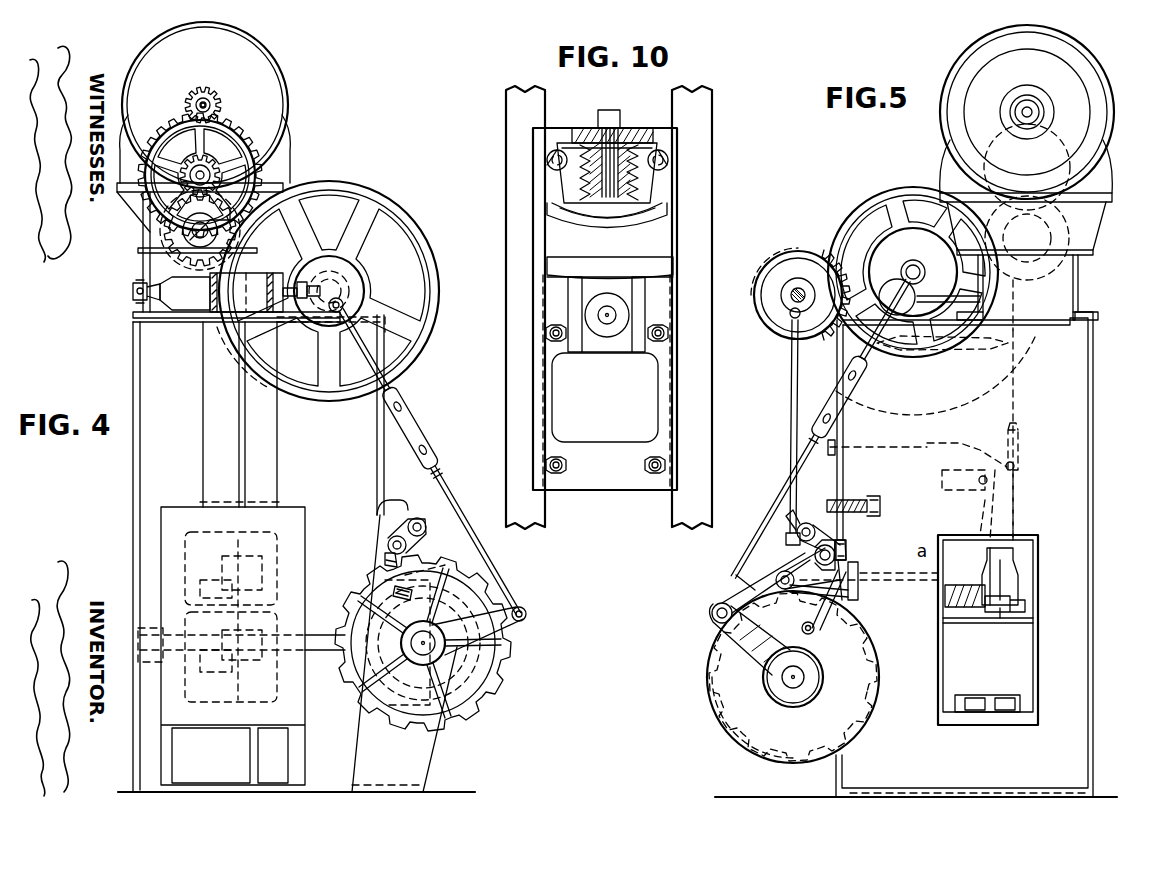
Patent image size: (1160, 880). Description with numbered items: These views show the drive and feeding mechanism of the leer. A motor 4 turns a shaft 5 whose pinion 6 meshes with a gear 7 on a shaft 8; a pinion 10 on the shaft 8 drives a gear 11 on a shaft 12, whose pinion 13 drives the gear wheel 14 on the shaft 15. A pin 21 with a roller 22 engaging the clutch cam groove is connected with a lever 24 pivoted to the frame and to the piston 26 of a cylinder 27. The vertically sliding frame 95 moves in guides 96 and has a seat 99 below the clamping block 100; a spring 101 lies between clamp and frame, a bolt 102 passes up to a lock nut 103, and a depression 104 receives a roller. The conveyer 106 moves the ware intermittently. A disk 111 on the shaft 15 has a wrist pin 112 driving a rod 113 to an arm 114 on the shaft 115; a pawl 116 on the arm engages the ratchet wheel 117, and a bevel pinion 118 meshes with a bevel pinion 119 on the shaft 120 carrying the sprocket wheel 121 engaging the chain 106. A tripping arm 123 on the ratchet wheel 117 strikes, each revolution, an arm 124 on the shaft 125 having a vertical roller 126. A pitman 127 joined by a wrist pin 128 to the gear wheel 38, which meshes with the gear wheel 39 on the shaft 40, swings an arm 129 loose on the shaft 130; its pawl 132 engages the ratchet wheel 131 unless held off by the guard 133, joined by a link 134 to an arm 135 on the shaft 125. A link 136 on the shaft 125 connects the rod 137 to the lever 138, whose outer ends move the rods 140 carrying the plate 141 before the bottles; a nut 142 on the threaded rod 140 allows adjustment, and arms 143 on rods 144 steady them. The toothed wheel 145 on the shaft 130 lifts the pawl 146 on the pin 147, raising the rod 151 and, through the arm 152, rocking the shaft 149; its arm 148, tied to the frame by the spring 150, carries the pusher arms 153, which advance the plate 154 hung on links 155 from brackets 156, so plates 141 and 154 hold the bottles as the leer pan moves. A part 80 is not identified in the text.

In FIG. 4, the motor 4 is at (283, 98).
In FIG. 5, the motor 4 is at (1085, 120).
In FIG. 4, the shaft 5 is at (219, 104).
In FIG. 4, the pinion 6 is at (203, 90).
In FIG. 4, the gear 7 is at (224, 129).
In FIG. 4, the shaft 8 is at (233, 161).
In FIG. 4, the pinion 10 is at (220, 173).
In FIG. 4, the gear 11 is at (200, 197).
In FIG. 4, the shaft 12 is at (210, 230).
In FIG. 4, the pinion 13 is at (192, 233).
In FIG. 4, the gear wheel 14 is at (398, 207).
In FIG. 4, the shaft 15 is at (340, 290).
In FIG. 5, the shaft 15 is at (960, 300).
In FIG. 4, the pin 21 is at (267, 320).
In FIG. 4, the roller 22 is at (296, 326).
In FIG. 4, the lever 24 is at (133, 290).
In FIG. 4, the piston 26 is at (163, 300).
In FIG. 4, the cylinder 27 is at (235, 297).
In FIG. 10, the vertically sliding frame 95 is at (675, 216).
In FIG. 10, the guides 96 is at (709, 163).
In FIG. 10, the seat 99 is at (607, 268).
In FIG. 10, the clamping block 100 is at (618, 212).
In FIG. 10, the spring 101 is at (583, 182).
In FIG. 10, the bolt 102 is at (609, 156).
In FIG. 10, the lock nut 103 is at (603, 111).
In FIG. 10, the depression or seat 104 is at (602, 222).
In FIG. 4, the conveyer 106 is at (243, 600).
In FIG. 5, the conveyer 106 is at (975, 617).
In FIG. 4, the disk 111 is at (352, 255).
In FIG. 4, the wrist pin 112 is at (344, 303).
In FIG. 4, the rod 113 is at (396, 387).
In FIG. 4, the arm 114 is at (497, 652).
In FIG. 4, the shaft 115 is at (407, 653).
In FIG. 4, the pawl 116 is at (511, 591).
In FIG. 4, the ratchet wheel 117 is at (500, 672).
In FIG. 4, the bevel pinion 118 is at (455, 648).
In FIG. 4, the bevel pinion 119 is at (376, 630).
In FIG. 4, the shaft 120 is at (320, 647).
In FIG. 4, the sprocket wheel 121 is at (232, 667).
In FIG. 4, the tripping arm 123 is at (420, 582).
In FIG. 4, the arm 124 is at (391, 553).
In FIG. 4, the shaft 125 is at (398, 536).
In FIG. 5, the shaft 125 is at (836, 555).
In FIG. 4, the vertical roller 126 is at (385, 558).
In FIG. 5, the pitman 127 is at (806, 461).
In FIG. 5, the wrist pin 128 is at (918, 263).
In FIG. 5, the arm 129 is at (735, 656).
In FIG. 5, the shaft 130 is at (782, 678).
In FIG. 5, the ratchet wheel 131 is at (725, 712).
In FIG. 5, the pawl 132 is at (732, 582).
In FIG. 5, the guard 133 is at (732, 597).
In FIG. 5, the link 134 is at (800, 641).
In FIG. 5, the arm 135 is at (830, 622).
In FIG. 5, the link 136 is at (790, 556).
In FIG. 5, the rod 137 is at (791, 405).
In FIG. 5, the lever 138 is at (980, 365).
In FIG. 5, the rods 140 is at (1018, 370).
In FIG. 5, the plate 141 is at (1010, 503).
In FIG. 5, the nut 142 is at (1019, 341).
In FIG. 5, the arms 143 is at (979, 462).
In FIG. 5, the rods 144 is at (878, 447).
In FIG. 5, the toothed wheel 145 is at (860, 712).
In FIG. 5, the pawl 146 is at (852, 600).
In FIG. 5, the pin 147 is at (800, 560).
In FIG. 5, the arm 148 is at (848, 545).
In FIG. 5, the shaft 149 is at (815, 526).
In FIG. 5, the spring 150 is at (848, 498).
In FIG. 5, the rod 151 is at (848, 592).
In FIG. 5, the arm 152 is at (800, 515).
In FIG. 5, the pusher arms 153 is at (950, 580).
In FIG. 5, the plate 154 is at (1000, 601).
In FIG. 5, the links 155 is at (990, 496).
In FIG. 5, the brackets 156 is at (978, 481).
In FIG. 5, the gear wheel 38 is at (874, 259).
In FIG. 5, the gear wheel 39 is at (779, 254).
In FIG. 5, the shaft 40 is at (791, 295).
In FIG. 5, the valve 80 is at (1010, 570).